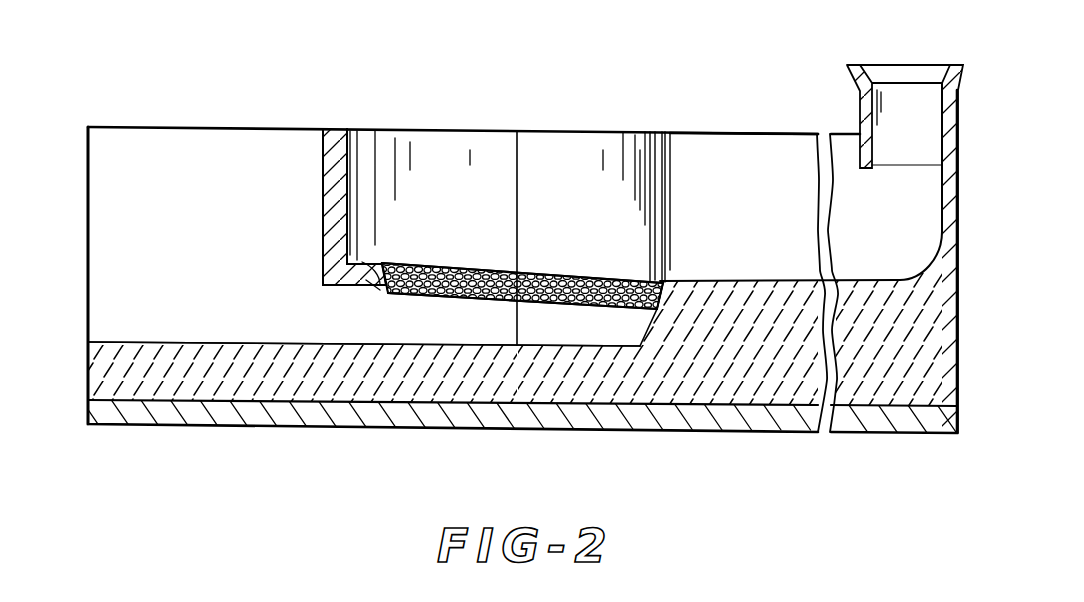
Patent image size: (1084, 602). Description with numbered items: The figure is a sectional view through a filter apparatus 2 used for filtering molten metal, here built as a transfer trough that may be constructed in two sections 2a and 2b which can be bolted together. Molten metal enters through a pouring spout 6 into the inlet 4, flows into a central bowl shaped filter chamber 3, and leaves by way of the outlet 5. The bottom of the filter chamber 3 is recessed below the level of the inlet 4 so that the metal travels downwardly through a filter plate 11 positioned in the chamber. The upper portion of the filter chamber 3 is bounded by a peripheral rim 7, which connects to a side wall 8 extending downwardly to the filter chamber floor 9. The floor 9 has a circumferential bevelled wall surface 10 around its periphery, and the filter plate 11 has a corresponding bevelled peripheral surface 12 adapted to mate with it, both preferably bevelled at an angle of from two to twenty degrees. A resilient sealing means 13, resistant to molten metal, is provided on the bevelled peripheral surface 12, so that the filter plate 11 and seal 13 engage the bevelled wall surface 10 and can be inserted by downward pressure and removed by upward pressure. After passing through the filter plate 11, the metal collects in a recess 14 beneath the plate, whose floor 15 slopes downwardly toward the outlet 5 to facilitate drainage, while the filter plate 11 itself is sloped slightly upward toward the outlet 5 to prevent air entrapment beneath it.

The filter apparatus 2 is at (300, 108).
The section of filter apparatus 2a is at (704, 390).
The section of filter apparatus 2b is at (273, 393).
The filter chamber 3 is at (424, 219).
The inlet 4 is at (765, 157).
The outlet 5 is at (115, 333).
The pouring spout 6 is at (892, 95).
The peripheral rim 7 is at (335, 138).
The side wall 8 is at (352, 146).
The filter chamber floor 9 is at (362, 256).
The bevelled wall surface 10 is at (370, 282).
The filter plate 11 is at (543, 277).
The bevelled peripheral surface 12 is at (384, 266).
The resilient sealing means 13 is at (388, 296).
The recess 14 is at (466, 336).
The floor of recess 15 is at (333, 344).